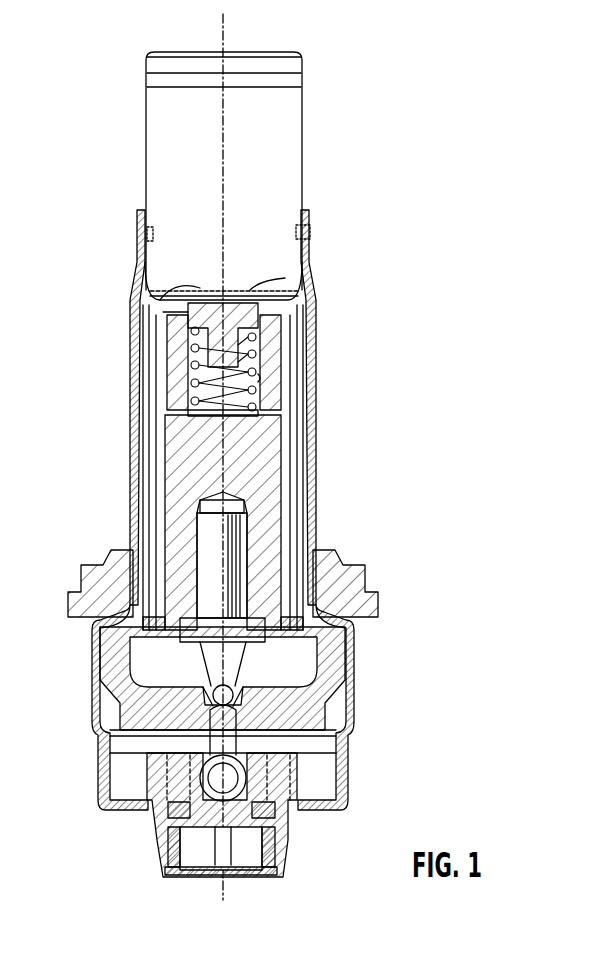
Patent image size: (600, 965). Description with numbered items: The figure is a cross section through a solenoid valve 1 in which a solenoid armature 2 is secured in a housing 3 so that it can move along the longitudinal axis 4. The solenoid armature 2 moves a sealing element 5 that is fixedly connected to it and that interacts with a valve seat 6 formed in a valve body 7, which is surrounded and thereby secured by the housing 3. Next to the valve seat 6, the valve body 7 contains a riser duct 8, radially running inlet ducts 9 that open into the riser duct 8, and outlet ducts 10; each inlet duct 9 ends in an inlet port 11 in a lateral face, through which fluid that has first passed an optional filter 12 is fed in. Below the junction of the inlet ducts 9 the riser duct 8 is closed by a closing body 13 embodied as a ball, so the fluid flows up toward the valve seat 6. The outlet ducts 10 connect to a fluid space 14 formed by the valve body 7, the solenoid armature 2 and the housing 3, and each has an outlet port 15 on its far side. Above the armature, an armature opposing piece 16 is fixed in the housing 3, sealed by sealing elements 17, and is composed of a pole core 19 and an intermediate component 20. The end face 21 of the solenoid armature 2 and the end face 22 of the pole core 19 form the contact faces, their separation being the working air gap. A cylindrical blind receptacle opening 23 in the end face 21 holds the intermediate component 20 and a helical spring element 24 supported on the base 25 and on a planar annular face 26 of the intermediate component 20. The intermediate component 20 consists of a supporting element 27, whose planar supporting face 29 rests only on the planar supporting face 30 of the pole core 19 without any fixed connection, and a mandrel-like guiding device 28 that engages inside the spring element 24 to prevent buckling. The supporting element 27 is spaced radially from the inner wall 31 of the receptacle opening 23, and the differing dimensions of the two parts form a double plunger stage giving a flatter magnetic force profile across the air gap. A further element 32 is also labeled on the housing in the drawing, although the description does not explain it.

The solenoid valve 1 is at (425, 256).
The solenoid armature 2 is at (267, 460).
The housing 3 is at (313, 485).
The longitudinal axis 4 is at (223, 38).
The sealing element 5 is at (228, 662).
The valve seat 6 is at (242, 715).
The valve body 7 is at (110, 690).
The riser duct 8 is at (207, 720).
The inlet duct 9 is at (163, 738).
The outlet duct 10 is at (163, 763).
The inlet port 11 is at (157, 750).
The filter 12 is at (112, 790).
The closing body 13 is at (222, 848).
The fluid space 14 is at (143, 645).
The outlet port 15 is at (190, 845).
The armature opposing piece 16 is at (134, 154).
The sealing elements 17 is at (147, 233).
The pole core 19 is at (285, 155).
The intermediate component 20 is at (265, 307).
The end face 21 is at (279, 313).
The end face 22 is at (163, 308).
The receptacle opening 23 is at (253, 363).
The spring element 24 is at (187, 380).
The base 25 is at (190, 402).
The face 26 is at (188, 338).
The supporting element 27 is at (187, 320).
The guiding device 28 is at (187, 358).
The supporting face 29 is at (252, 286).
The supporting face 30 is at (200, 306).
The inner wall 31 is at (258, 378).
The flange 32 is at (358, 573).